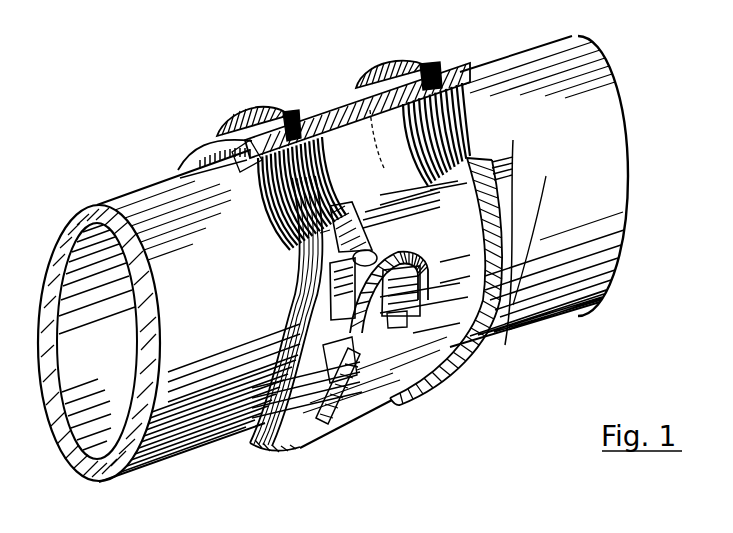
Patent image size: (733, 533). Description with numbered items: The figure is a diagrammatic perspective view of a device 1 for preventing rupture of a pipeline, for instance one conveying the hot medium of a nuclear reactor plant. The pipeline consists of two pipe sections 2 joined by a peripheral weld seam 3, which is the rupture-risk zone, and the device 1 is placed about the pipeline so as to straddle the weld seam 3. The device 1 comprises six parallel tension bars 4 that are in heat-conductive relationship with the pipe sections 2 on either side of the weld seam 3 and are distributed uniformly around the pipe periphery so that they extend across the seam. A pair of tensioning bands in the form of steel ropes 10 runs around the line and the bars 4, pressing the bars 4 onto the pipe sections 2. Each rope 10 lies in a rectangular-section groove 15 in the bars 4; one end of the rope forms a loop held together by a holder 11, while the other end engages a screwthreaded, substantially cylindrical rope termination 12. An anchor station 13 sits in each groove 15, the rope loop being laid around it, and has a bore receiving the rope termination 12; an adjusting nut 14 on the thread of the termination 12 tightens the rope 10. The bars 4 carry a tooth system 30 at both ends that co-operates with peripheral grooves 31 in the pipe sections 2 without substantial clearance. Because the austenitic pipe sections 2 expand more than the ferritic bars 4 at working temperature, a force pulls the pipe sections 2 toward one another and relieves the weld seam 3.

The device 1 is at (214, 112).
The pipe sections 2 is at (142, 455).
The weld seam 3 is at (371, 172).
The tension bars 4 is at (506, 220).
The steel ropes 10 is at (286, 450).
The holder 11 is at (343, 413).
The rope termination 12 is at (388, 372).
The anchor station 13 is at (412, 290).
The adjusting nut 14 is at (403, 332).
The groove 15 is at (303, 113).
The tooth system 30 is at (250, 181).
The peripheral grooves 31 is at (270, 235).